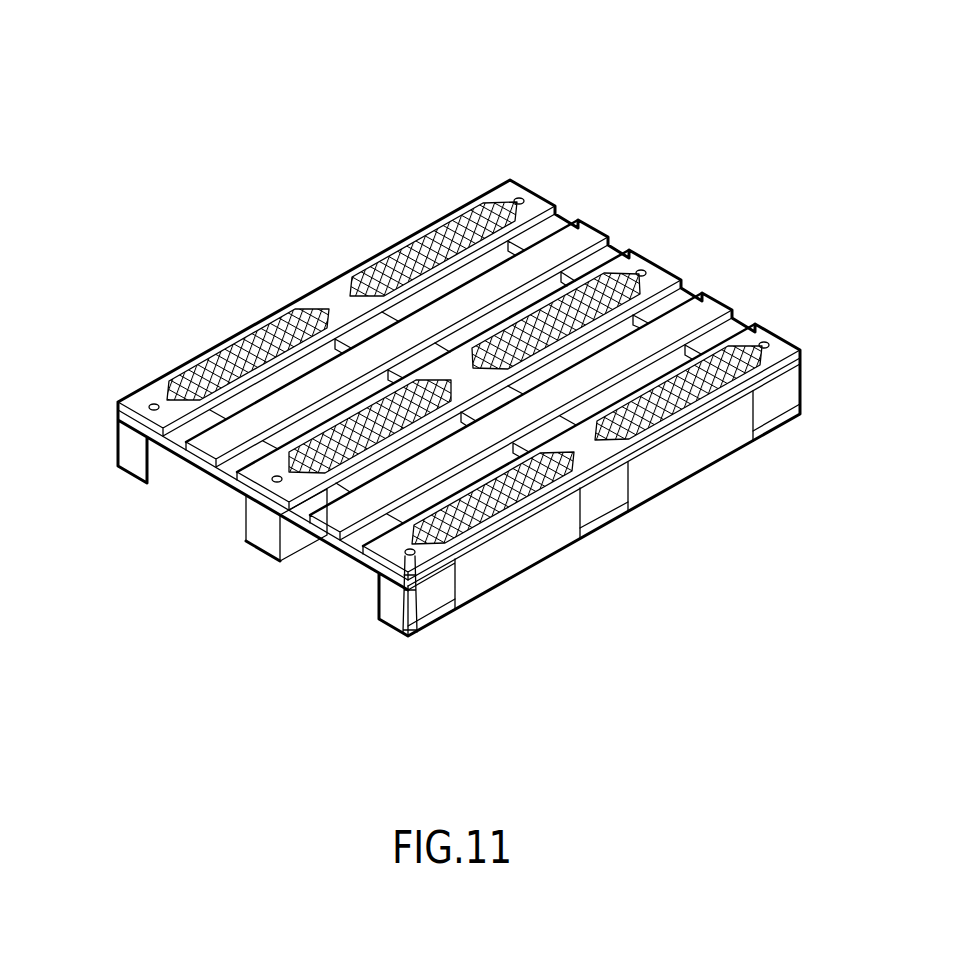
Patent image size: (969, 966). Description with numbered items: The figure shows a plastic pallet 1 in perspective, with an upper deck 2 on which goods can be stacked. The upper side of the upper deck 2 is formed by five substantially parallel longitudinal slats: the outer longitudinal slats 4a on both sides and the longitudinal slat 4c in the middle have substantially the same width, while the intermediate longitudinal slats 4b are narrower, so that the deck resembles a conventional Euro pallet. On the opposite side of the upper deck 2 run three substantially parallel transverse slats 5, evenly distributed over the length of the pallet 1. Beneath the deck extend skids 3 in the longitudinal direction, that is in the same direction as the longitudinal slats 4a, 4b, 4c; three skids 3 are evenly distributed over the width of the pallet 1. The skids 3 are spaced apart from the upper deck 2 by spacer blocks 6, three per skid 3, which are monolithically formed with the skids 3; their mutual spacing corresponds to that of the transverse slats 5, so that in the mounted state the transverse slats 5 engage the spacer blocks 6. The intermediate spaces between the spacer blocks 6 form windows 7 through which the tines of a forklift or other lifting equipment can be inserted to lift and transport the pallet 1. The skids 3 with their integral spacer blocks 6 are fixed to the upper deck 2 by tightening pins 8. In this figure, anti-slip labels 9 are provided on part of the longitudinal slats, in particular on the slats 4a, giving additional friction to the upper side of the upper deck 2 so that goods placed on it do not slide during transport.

The pallet 1 is at (372, 108).
The upper deck 2 is at (652, 280).
The skids 3 is at (273, 387).
The outer longitudinal slats 4a is at (485, 185).
The intermediate longitudinal slats 4b is at (575, 225).
The middle longitudinal slat 4c is at (690, 275).
The transverse slats 5 is at (567, 237).
The spacer blocks 6 is at (138, 470).
The windows 7 is at (178, 487).
The tightening pins 8 is at (400, 628).
The anti-slip labels 9 is at (445, 235).